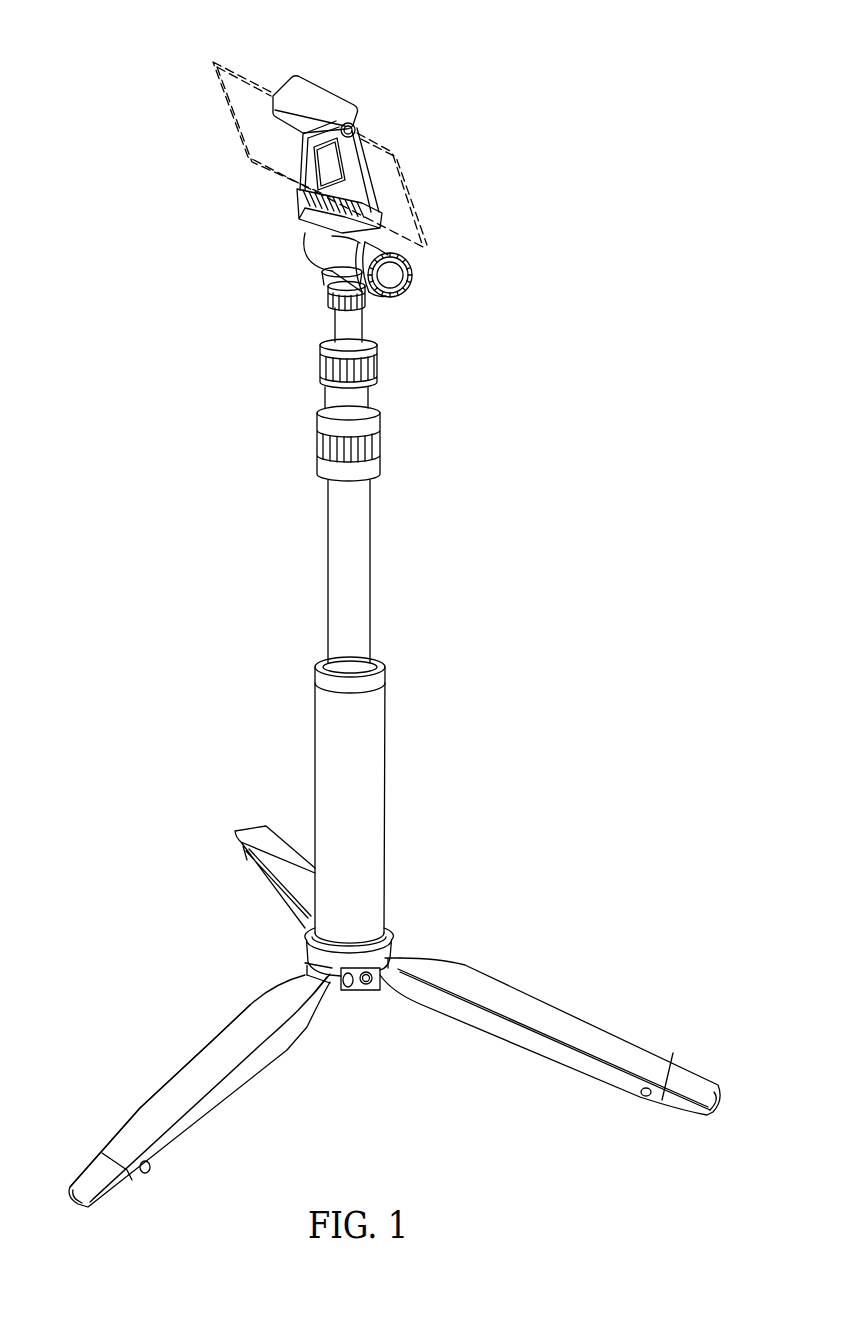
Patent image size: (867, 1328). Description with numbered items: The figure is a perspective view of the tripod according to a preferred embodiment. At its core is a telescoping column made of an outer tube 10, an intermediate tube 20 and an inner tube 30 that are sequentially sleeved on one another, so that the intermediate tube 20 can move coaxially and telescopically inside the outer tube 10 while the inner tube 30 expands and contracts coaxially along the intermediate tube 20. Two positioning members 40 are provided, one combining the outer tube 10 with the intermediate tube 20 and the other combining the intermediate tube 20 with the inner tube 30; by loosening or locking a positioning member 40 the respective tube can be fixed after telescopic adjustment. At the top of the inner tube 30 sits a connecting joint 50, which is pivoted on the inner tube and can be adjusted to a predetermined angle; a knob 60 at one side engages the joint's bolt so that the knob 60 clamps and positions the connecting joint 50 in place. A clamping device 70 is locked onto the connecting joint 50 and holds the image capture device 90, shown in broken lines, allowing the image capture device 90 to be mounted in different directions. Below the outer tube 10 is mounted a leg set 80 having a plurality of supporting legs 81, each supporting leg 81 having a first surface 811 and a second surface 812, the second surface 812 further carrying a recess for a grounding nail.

The outer tube 10 is at (385, 638).
The intermediate tube 20 is at (360, 388).
The inner tube 30 is at (369, 321).
The positioning member 40 is at (316, 330).
The connecting joint 50 is at (303, 238).
The knob 60 is at (418, 243).
The clamping device 70 is at (289, 65).
The leg set 80 is at (374, 1004).
The supporting leg 81 is at (253, 827).
The first surface 811 is at (197, 1067).
The second surface 812 is at (220, 1107).
The image capture device 90 is at (212, 133).